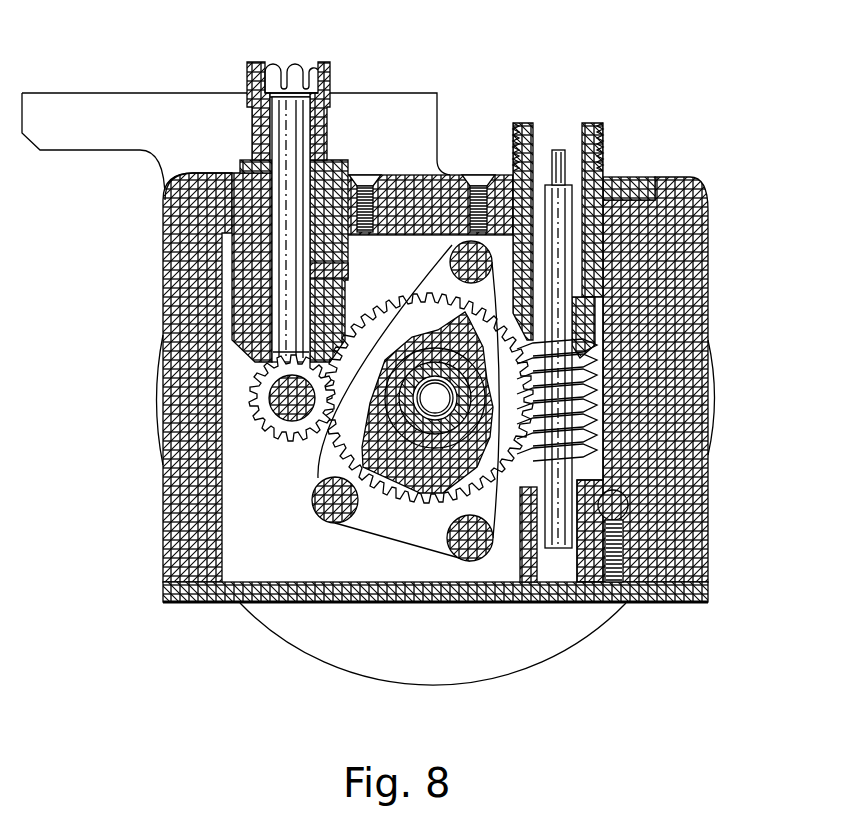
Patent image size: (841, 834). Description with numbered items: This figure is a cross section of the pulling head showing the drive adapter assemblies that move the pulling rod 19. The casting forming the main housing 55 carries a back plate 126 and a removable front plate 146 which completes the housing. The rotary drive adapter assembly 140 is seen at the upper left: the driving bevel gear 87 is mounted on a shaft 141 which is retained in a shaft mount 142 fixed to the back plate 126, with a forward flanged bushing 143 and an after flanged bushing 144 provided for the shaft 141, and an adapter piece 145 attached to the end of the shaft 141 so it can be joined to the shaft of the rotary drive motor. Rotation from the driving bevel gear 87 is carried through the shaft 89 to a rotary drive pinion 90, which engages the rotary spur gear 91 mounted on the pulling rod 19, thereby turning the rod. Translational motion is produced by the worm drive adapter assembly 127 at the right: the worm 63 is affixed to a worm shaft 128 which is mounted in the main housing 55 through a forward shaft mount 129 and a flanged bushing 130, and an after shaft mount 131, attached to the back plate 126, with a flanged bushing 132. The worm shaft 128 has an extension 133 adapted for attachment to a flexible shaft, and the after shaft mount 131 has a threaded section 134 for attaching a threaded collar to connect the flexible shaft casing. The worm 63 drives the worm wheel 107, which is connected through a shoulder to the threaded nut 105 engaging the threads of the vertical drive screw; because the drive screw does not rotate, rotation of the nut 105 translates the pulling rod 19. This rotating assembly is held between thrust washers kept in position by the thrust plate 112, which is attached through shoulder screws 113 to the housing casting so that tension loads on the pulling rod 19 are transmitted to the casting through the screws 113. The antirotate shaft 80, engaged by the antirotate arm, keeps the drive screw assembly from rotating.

The pulling rod 19 is at (427, 407).
The main housing 55 is at (693, 560).
The worm 63 is at (598, 393).
The antirotate shaft 80 is at (620, 500).
The driving bevel gear 87 is at (240, 296).
The shaft 89 is at (288, 405).
The rotary drive pinion 90 is at (255, 410).
The rotary spur gear 91 is at (387, 302).
The threaded nut 105 is at (400, 495).
The worm wheel 107 is at (327, 507).
The thrust plate 112 is at (422, 530).
The shoulder screws 113 is at (312, 510).
The back plate 126 is at (440, 122).
The worm drive adapter assembly 127 is at (530, 113).
The worm shaft 128 is at (557, 277).
The forward shaft mount 129 is at (533, 583).
The flanged bushing 130 is at (580, 593).
The after shaft mount 131 is at (613, 178).
The flanged bushing 132 is at (575, 310).
The extension 133 is at (558, 150).
The threaded section 134 is at (592, 122).
The rotary drive adapter assembly 140 is at (205, 158).
The shaft 141 is at (292, 128).
The shaft mount 142 is at (342, 175).
The forward flanged bushing 143 is at (348, 275).
The after flanged bushing 144 is at (248, 163).
The adapter piece 145 is at (312, 68).
The removable front plate 146 is at (180, 592).